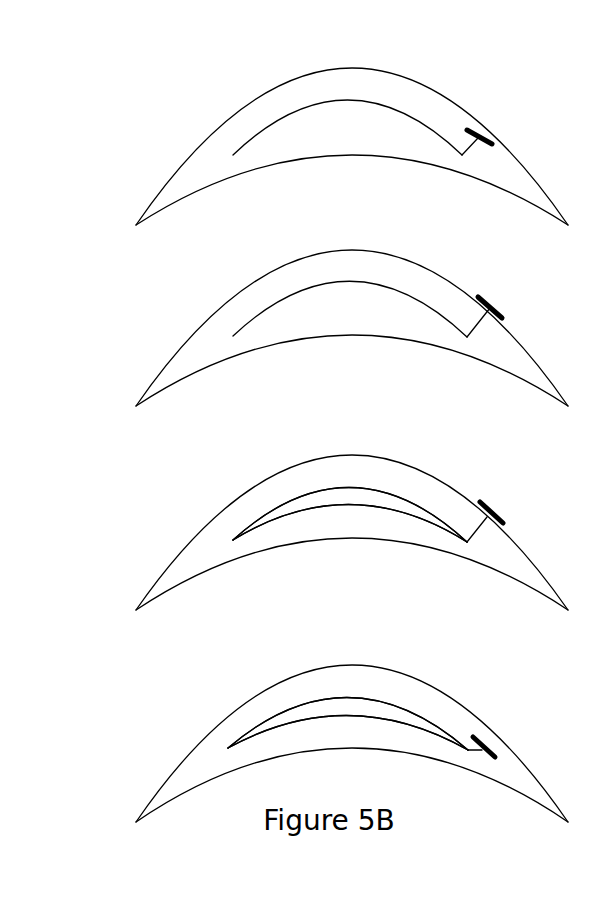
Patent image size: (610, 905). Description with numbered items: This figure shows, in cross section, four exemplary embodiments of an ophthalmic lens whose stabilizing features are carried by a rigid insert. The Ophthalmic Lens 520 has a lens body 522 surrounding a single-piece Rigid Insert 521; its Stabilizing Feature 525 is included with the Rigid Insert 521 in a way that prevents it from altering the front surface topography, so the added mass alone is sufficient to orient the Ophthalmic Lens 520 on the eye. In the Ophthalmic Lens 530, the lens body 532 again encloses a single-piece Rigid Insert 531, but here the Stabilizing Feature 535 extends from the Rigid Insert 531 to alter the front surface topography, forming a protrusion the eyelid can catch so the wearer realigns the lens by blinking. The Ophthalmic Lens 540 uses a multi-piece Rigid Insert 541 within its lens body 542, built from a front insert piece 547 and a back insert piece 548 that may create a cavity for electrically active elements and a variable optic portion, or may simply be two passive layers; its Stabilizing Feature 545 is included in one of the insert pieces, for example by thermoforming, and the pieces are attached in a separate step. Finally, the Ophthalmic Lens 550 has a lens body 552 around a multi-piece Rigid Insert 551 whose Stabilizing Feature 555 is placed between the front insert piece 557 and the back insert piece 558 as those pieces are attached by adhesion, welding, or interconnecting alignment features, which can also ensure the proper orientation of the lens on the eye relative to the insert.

The ophthalmic lens 520 is at (312, 125).
The rigid insert 521 is at (272, 120).
The lens body 522 is at (205, 167).
The stabilizing feature 525 is at (497, 138).
The ophthalmic lens 530 is at (312, 308).
The rigid insert 531 is at (275, 307).
The lens body 532 is at (208, 354).
The stabilizing feature 535 is at (493, 308).
The ophthalmic lens 540 is at (312, 518).
The rigid insert 541 is at (233, 537).
The front insert piece 542 is at (195, 563).
The stabilizing feature 545 is at (500, 518).
The front insert piece 547 is at (300, 493).
The back insert piece 548 is at (395, 507).
The ophthalmic lens 550 is at (312, 730).
The rigid insert 551 is at (224, 748).
The lens body 552 is at (193, 768).
The stabilizing feature 555 is at (494, 743).
The front insert piece 557 is at (290, 706).
The back insert piece 558 is at (397, 718).